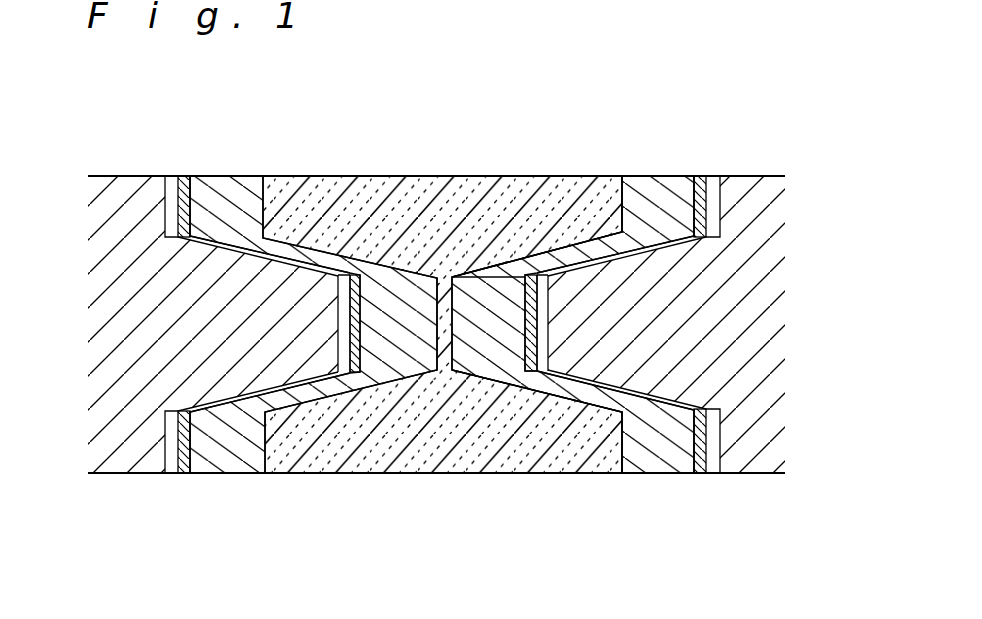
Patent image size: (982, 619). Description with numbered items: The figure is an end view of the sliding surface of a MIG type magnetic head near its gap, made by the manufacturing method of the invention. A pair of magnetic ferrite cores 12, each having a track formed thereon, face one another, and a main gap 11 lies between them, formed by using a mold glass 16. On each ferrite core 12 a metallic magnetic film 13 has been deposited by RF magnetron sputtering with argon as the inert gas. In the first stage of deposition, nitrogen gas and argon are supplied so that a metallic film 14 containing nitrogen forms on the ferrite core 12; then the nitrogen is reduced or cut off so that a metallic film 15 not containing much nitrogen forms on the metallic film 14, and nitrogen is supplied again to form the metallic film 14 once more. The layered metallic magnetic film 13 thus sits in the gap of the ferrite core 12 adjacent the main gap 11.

The main gap 11 is at (452, 277).
The ferrite core 12 is at (157, 385).
The metallic magnetic film 13 is at (484, 350).
The metallic film containing nitrogen 14 is at (343, 276).
The metallic film not containing much nitrogen 15 is at (350, 353).
The mold glass 16 is at (572, 417).